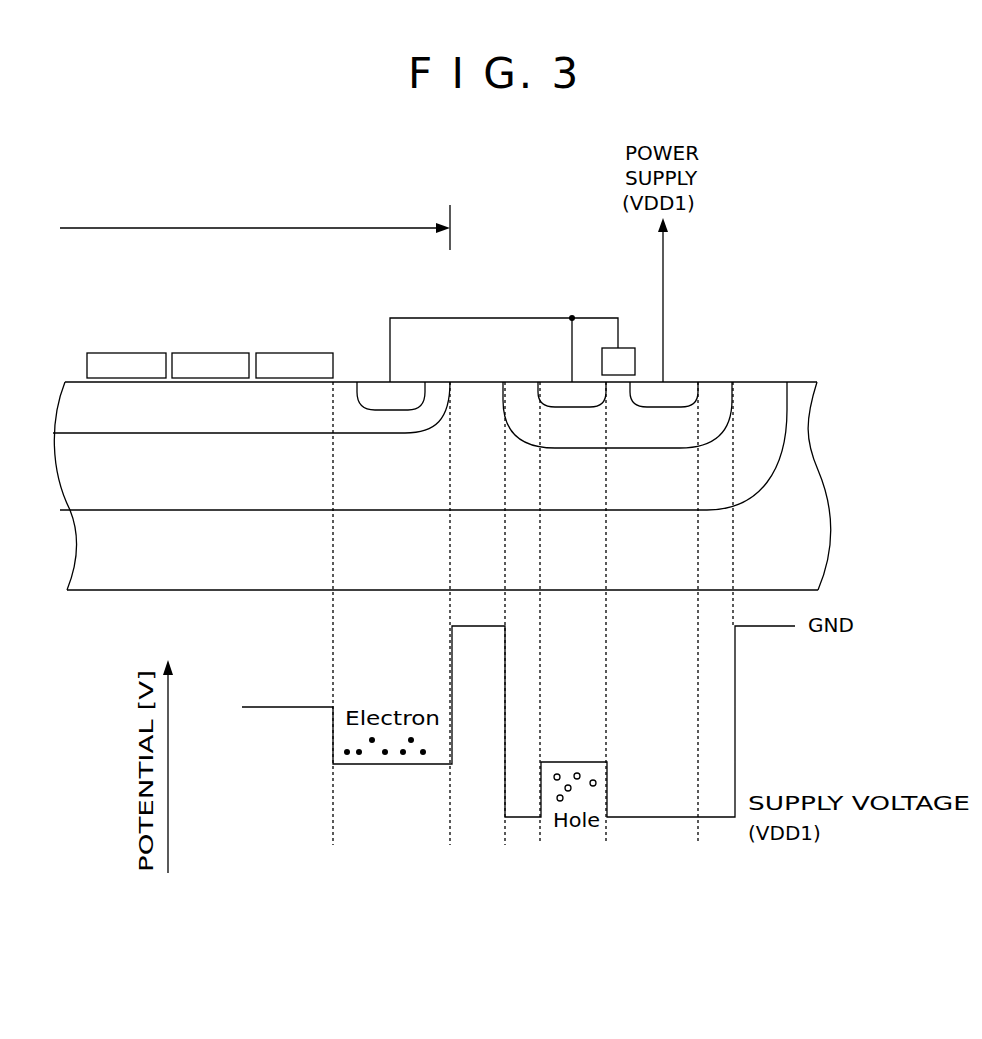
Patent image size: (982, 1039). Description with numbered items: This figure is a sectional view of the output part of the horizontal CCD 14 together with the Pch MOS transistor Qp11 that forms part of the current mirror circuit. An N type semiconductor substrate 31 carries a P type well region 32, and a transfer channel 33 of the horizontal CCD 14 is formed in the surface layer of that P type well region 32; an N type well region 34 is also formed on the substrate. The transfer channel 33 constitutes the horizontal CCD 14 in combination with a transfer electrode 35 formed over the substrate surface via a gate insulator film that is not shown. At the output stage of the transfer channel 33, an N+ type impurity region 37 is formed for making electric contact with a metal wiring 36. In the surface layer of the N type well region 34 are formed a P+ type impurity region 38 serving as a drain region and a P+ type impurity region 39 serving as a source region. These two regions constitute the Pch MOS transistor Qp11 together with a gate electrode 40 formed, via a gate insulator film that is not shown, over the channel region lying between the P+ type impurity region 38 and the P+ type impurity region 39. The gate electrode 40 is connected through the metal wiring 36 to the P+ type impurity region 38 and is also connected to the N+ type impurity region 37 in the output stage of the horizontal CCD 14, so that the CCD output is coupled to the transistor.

The horizontal CCD 14 is at (255, 227).
The N type semiconductor substrate 31 is at (803, 540).
The P type well region 32 is at (712, 472).
The transfer channel 33 is at (100, 420).
The N type well region 34 is at (712, 407).
The transfer electrode 35 is at (296, 360).
The metal wiring 36 is at (488, 327).
The N+ type impurity region 37 is at (363, 388).
The P+ type impurity region 38 is at (553, 387).
The P+ type impurity region 39 is at (685, 388).
The gate electrode 40 is at (625, 360).
The Pch MOS transistor Qp11 is at (720, 285).